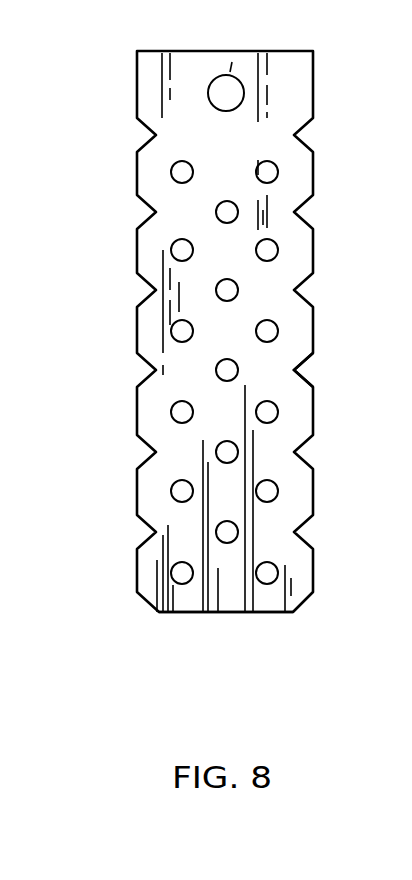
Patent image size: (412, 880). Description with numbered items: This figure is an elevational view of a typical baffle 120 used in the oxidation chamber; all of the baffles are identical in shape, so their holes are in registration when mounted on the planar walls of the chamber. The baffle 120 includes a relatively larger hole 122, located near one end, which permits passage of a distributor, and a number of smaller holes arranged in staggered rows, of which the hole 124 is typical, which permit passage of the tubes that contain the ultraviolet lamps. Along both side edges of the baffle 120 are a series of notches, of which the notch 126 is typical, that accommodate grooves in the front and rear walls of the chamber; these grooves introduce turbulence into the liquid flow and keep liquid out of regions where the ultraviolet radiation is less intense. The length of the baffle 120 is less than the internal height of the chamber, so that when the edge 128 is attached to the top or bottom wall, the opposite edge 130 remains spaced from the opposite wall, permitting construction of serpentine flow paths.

The baffle 120 is at (137, 485).
The relatively larger hole 122 is at (237, 50).
The smaller hole 124 is at (278, 249).
The notch 126 is at (303, 372).
The edge 128 is at (230, 51).
The opposite edge 130 is at (253, 612).